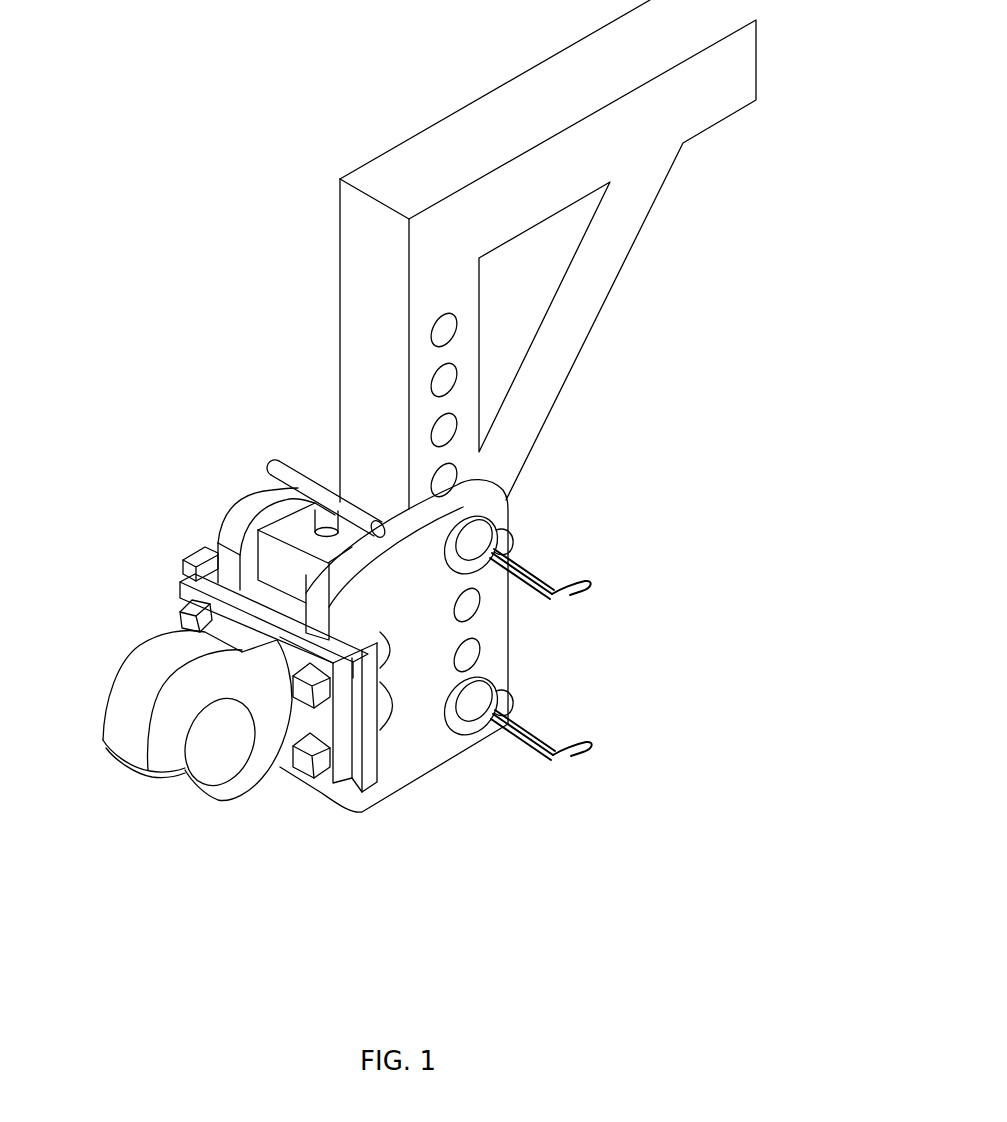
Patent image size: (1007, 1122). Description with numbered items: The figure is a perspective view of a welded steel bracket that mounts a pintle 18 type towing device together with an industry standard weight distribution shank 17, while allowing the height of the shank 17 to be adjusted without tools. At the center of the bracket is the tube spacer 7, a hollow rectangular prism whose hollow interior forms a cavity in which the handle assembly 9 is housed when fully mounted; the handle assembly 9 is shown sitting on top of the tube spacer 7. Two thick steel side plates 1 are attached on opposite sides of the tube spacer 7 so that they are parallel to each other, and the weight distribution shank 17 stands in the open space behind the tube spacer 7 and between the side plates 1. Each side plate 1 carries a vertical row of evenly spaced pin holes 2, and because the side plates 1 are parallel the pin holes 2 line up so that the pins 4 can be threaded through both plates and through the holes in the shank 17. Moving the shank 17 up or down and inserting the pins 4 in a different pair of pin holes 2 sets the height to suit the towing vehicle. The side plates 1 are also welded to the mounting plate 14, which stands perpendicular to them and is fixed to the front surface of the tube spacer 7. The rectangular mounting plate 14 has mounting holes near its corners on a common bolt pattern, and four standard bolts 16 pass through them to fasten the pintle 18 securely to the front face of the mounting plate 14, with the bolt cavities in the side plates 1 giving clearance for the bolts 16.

The side plates 1 is at (262, 507).
The pin holes 2 is at (467, 603).
The pins 4 is at (530, 549).
The tube spacer 7 is at (278, 563).
The handle assembly 9 is at (357, 480).
The mounting plate 14 is at (370, 743).
The bolts 16 is at (185, 620).
The weight distribution shank 17 is at (562, 345).
The pintle 18 is at (148, 713).